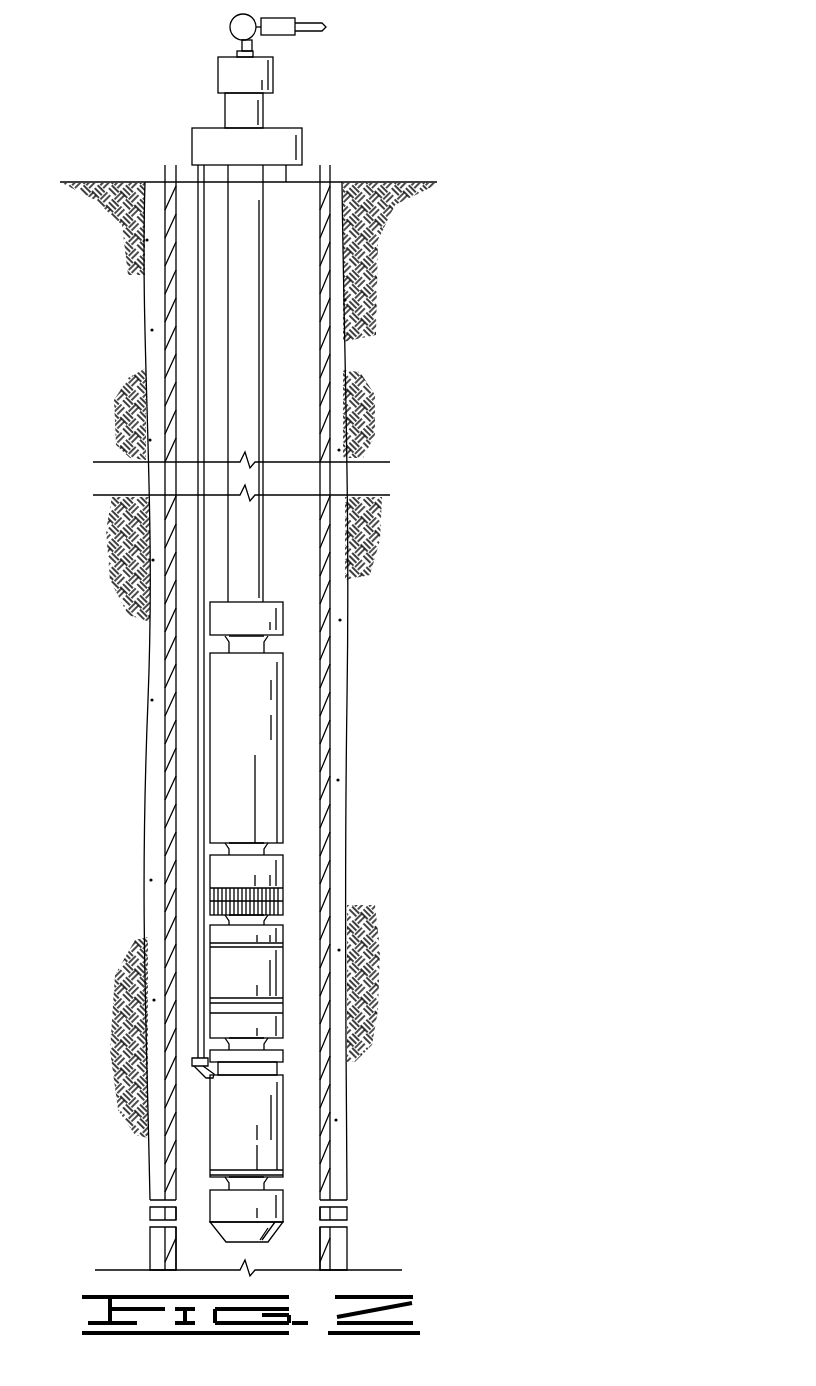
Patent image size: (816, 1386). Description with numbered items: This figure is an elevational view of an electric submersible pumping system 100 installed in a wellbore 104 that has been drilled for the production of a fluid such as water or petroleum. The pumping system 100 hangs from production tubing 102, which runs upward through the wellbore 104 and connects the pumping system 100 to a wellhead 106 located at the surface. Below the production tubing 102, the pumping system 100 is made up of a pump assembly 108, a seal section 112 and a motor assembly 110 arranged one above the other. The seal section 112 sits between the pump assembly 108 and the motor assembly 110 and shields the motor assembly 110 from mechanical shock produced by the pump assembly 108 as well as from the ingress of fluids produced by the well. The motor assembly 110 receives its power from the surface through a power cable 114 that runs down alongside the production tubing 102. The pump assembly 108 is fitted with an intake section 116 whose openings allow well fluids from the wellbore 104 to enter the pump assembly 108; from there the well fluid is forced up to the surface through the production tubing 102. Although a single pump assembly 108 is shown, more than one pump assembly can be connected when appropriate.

The pumping system 100 is at (340, 900).
The production tubing 102 is at (263, 362).
The wellbore 104 is at (165, 323).
The wellhead 106 is at (218, 76).
The pump assembly 108 is at (283, 705).
The motor assembly 110 is at (284, 1133).
The seal section 112 is at (285, 1030).
The power cable 114 is at (197, 687).
The intake section 116 is at (286, 872).